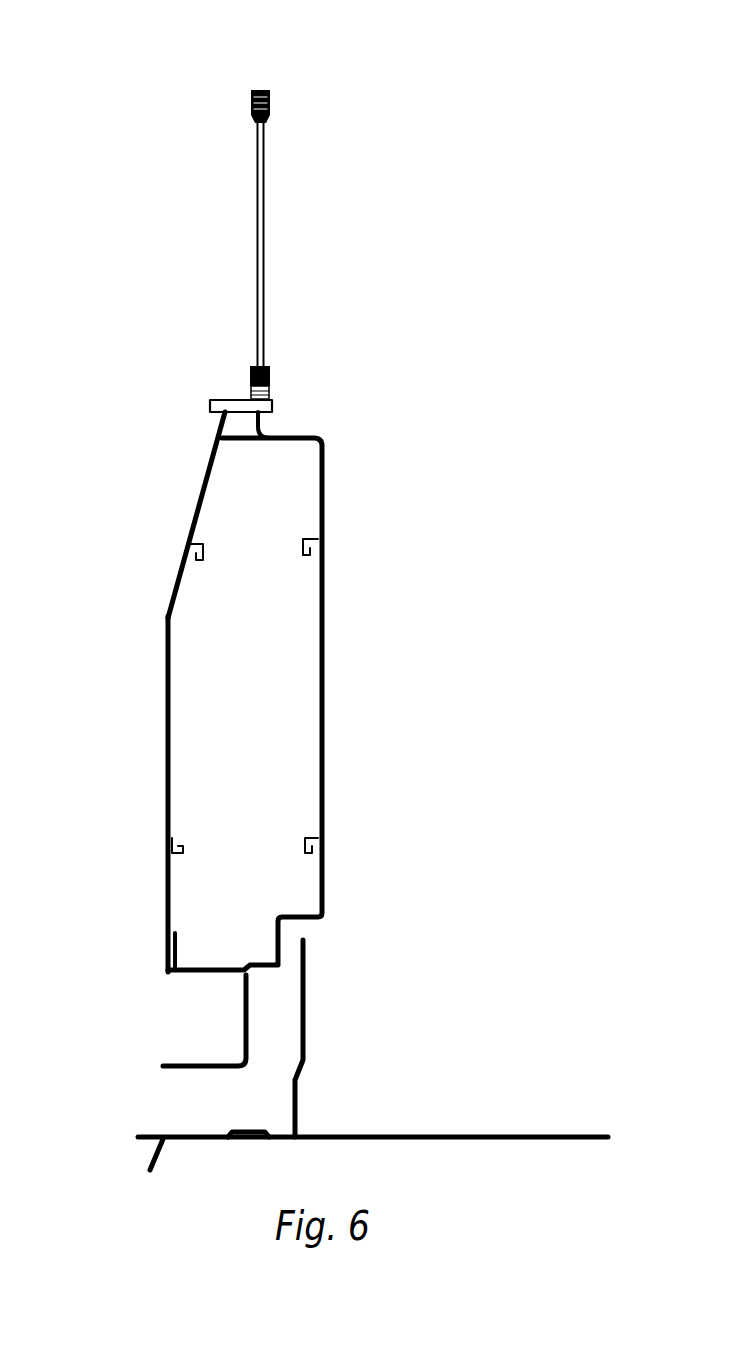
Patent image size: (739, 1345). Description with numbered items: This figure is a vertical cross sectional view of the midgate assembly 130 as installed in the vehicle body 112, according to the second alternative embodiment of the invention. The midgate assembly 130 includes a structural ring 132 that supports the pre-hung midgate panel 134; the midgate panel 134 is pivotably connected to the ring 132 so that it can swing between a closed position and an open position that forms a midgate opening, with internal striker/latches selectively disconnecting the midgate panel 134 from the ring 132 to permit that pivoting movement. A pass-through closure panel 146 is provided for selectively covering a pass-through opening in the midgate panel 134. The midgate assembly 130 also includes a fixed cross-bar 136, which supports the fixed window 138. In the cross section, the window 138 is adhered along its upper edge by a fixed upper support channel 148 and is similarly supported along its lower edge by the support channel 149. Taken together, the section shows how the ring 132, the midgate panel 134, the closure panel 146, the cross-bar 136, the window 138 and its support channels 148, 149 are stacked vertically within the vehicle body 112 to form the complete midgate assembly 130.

The vehicle body 112 is at (308, 1068).
The midgate assembly 130 is at (178, 692).
The structural ring 132 is at (233, 423).
The midgate panel 134 is at (195, 517).
The fixed cross-bar 136 is at (230, 399).
The fixed window 138 is at (262, 248).
The pass-through closure panel 146 is at (167, 648).
The fixed upper support channel 148 is at (260, 87).
The support channel 149 is at (271, 385).